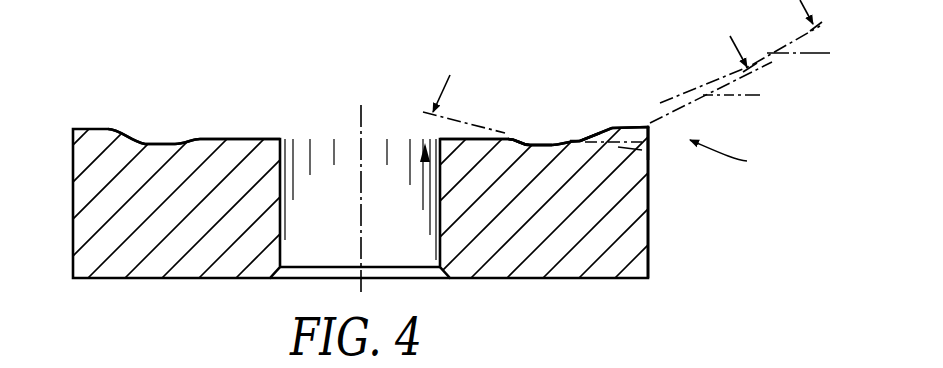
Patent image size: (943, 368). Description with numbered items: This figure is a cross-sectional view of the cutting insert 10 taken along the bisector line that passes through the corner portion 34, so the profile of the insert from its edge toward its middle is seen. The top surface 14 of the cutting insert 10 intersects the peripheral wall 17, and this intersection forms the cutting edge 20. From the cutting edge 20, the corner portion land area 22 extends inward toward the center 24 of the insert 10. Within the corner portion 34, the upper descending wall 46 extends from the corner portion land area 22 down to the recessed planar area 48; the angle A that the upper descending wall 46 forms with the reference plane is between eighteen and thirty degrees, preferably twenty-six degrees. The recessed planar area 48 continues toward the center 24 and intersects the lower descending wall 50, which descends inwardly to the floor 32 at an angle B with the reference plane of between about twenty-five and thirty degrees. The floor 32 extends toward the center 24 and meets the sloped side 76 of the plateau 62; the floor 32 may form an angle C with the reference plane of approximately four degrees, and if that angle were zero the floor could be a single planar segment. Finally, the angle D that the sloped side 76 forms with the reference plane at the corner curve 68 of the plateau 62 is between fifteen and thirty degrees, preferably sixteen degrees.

The cutting insert 10 is at (30, 207).
The top surface 14 is at (250, 139).
The peripheral wall 17 is at (650, 199).
The cutting edge 20 is at (651, 131).
The corner portion land area 22 is at (652, 125).
The center 24 is at (359, 124).
The floor 32 is at (555, 144).
The corner portion 34 is at (731, 159).
The upper descending wall 46 is at (648, 126).
The recessed planar area 48 is at (622, 127).
The lower descending wall 50 is at (591, 138).
The plateau 62 is at (468, 138).
The corner curve 68 is at (540, 144).
The sloped side 76 is at (523, 138).
The angle A is at (753, 100).
The angle B is at (817, 58).
The angle C is at (626, 150).
The angle D is at (444, 86).